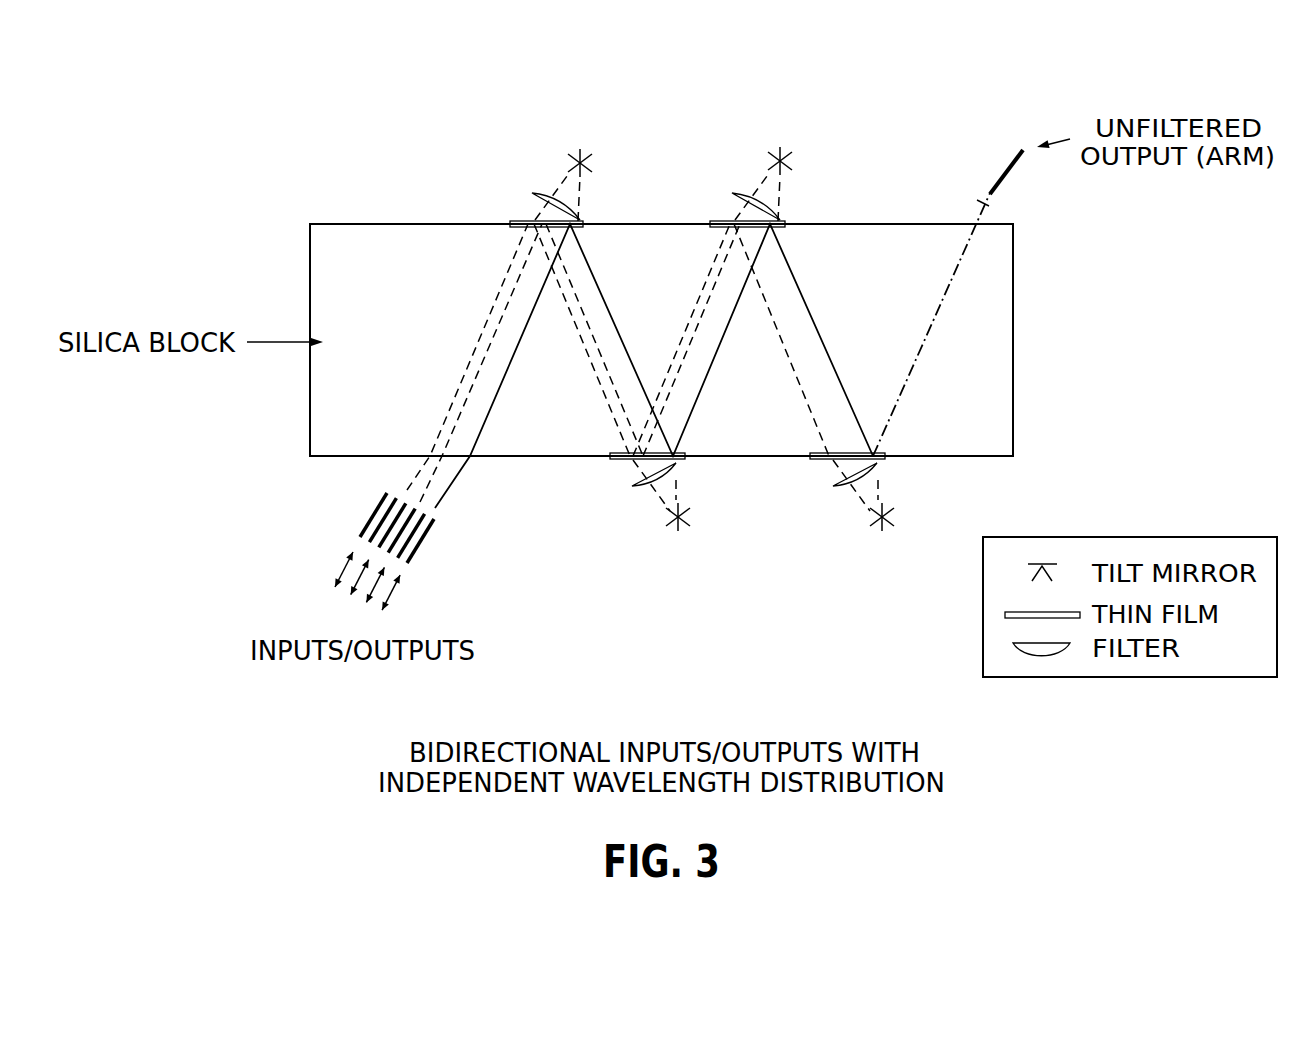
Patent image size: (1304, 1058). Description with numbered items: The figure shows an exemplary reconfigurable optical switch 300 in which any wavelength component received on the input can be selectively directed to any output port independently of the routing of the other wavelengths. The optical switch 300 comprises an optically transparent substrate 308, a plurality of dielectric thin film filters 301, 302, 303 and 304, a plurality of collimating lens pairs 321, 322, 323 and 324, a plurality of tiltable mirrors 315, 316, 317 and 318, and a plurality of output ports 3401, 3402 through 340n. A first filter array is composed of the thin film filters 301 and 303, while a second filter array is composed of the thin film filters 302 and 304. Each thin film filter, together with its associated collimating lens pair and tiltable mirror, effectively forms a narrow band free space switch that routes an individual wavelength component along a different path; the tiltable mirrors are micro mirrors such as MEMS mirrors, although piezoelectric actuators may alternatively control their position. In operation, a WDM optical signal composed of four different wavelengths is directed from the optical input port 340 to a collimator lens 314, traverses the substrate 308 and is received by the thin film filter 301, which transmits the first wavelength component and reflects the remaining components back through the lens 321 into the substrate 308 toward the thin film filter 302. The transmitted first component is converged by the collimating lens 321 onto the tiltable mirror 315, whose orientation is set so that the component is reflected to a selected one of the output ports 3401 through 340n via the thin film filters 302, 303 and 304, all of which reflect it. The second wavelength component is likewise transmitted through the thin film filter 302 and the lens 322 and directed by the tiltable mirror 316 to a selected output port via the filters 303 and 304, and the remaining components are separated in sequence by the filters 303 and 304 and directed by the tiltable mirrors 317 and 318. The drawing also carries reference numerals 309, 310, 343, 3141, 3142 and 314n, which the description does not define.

The optical switch 300 is at (198, 127).
The optically transparent substrate 308 is at (312, 399).
The top surface of silica block 309 is at (370, 222).
The bottom surface of silica block 310 is at (507, 458).
The thin film filter 301 is at (520, 222).
The thin film filter 302 is at (612, 460).
The thin film filter 303 is at (718, 222).
The thin film filter 304 is at (817, 461).
The collimating lens pair 321 is at (546, 199).
The collimating lens pair 322 is at (634, 487).
The collimating lens pair 323 is at (746, 199).
The collimating lens pair 324 is at (835, 487).
The tiltable mirror 315 is at (586, 163).
The tiltable mirror 316 is at (685, 517).
The tiltable mirror 317 is at (786, 161).
The tiltable mirror 318 is at (889, 517).
The unfiltered output port (ARM) 343 is at (1006, 178).
The collimator lens 314 is at (380, 511).
The first input/output port 3141 is at (397, 487).
The second input/output port 3142 is at (390, 503).
The n-th input/output port 314n is at (435, 509).
The optical input port 340 is at (372, 570).
The output port 3401 is at (363, 528).
The output port 3402 is at (350, 538).
The output port 340n is at (417, 556).